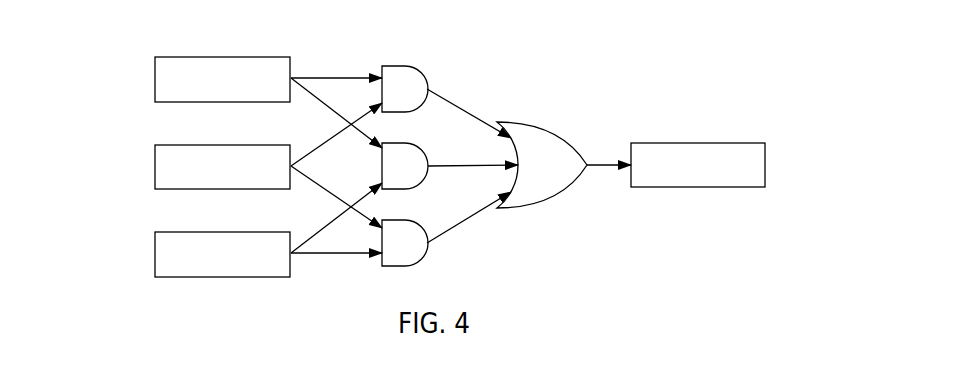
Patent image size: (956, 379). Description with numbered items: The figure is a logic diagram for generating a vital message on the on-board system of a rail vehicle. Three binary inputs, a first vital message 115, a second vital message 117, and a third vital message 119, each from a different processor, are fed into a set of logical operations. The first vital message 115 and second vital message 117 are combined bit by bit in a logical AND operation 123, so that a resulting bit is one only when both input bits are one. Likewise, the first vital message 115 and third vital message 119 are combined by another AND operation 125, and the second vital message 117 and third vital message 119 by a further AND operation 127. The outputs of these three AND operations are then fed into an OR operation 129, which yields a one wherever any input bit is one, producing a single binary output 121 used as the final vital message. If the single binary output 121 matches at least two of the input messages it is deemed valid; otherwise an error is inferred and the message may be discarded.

The first vital message 115 is at (190, 100).
The second vital message 117 is at (190, 188).
The third vital message 119 is at (191, 281).
The single binary output 121 is at (708, 188).
The logical AND operation 123 is at (416, 97).
The AND operation 125 is at (416, 174).
The AND operation 127 is at (416, 251).
The OR operation 129 is at (563, 175).